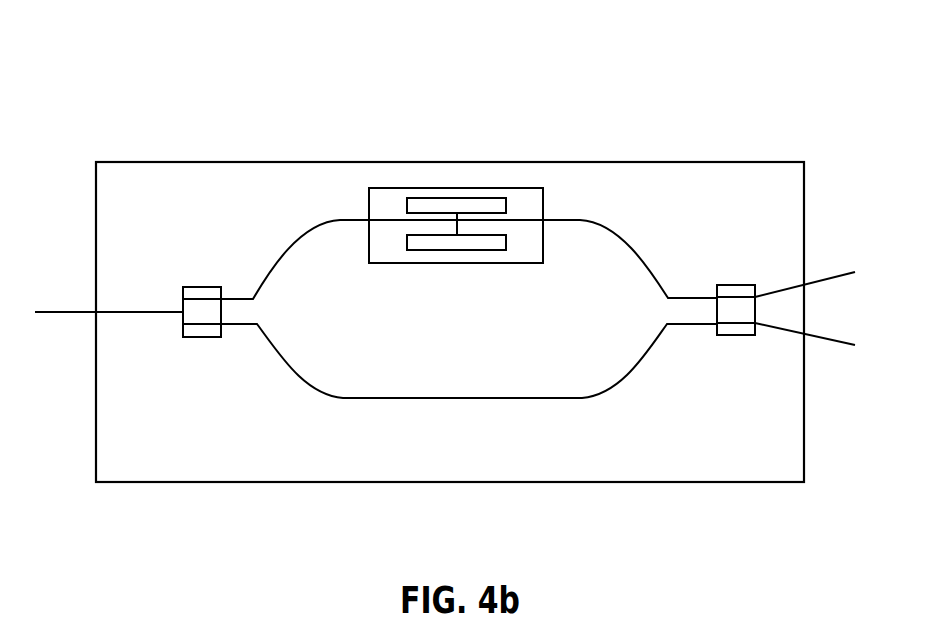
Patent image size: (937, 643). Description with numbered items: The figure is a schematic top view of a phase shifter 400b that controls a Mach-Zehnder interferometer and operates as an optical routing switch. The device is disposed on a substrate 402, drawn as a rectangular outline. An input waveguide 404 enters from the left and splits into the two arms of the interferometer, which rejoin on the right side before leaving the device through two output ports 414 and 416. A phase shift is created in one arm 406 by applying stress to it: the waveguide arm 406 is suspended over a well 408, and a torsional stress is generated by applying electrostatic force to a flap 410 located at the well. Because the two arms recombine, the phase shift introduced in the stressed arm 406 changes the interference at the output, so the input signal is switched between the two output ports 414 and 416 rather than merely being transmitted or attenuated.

The phase shifter 400b is at (678, 100).
The substrate 402 is at (753, 197).
The input waveguide 404 is at (53, 313).
The arm 406 is at (592, 223).
The well 408 is at (369, 214).
The flap 410 is at (518, 206).
The output port 414 is at (817, 283).
The output port 416 is at (830, 347).